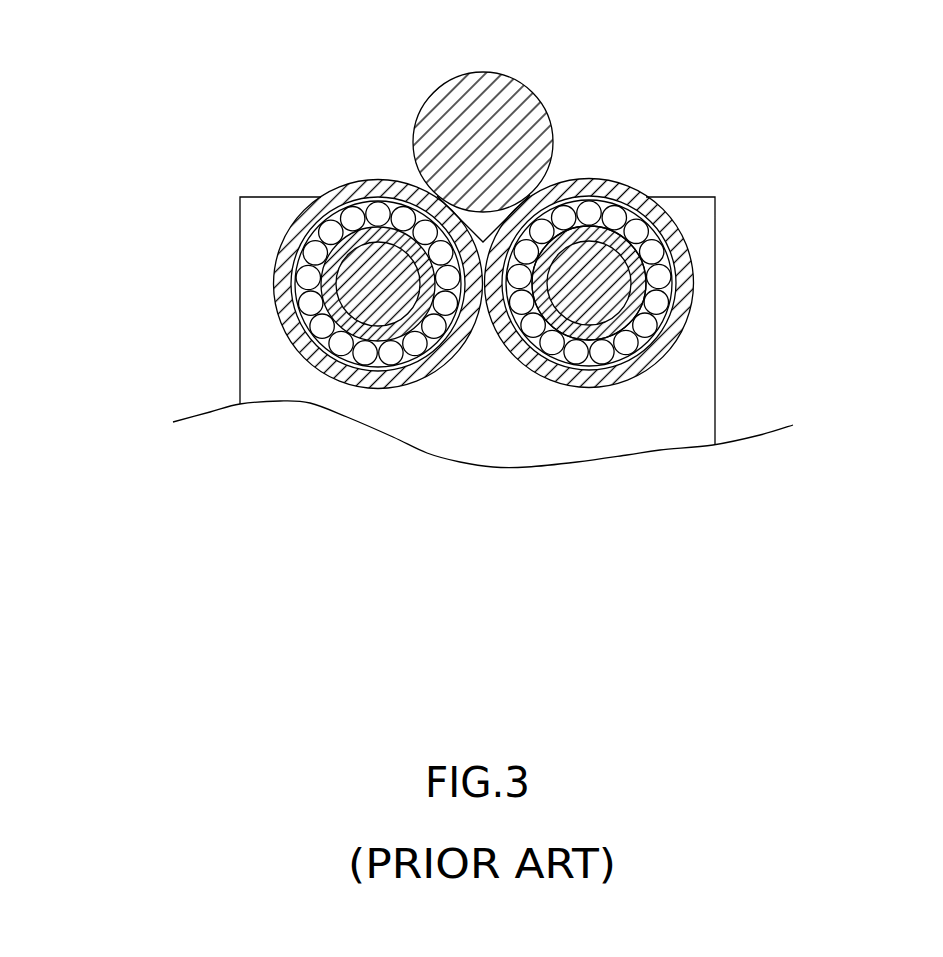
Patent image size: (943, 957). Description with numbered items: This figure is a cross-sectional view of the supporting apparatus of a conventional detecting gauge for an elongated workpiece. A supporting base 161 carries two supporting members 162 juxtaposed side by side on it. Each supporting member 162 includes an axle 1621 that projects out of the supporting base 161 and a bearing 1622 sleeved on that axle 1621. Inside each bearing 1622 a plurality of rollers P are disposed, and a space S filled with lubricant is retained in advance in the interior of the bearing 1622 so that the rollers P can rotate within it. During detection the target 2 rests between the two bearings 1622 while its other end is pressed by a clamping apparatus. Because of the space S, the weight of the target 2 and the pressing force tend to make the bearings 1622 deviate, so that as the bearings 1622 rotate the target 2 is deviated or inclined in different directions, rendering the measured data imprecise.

The target 2 is at (530, 88).
The supporting base 161 is at (270, 212).
The supporting member 162 is at (386, 178).
The axle 1621 is at (614, 311).
The bearing 1622 is at (653, 205).
The space S is at (659, 277).
The rollers P is at (672, 268).